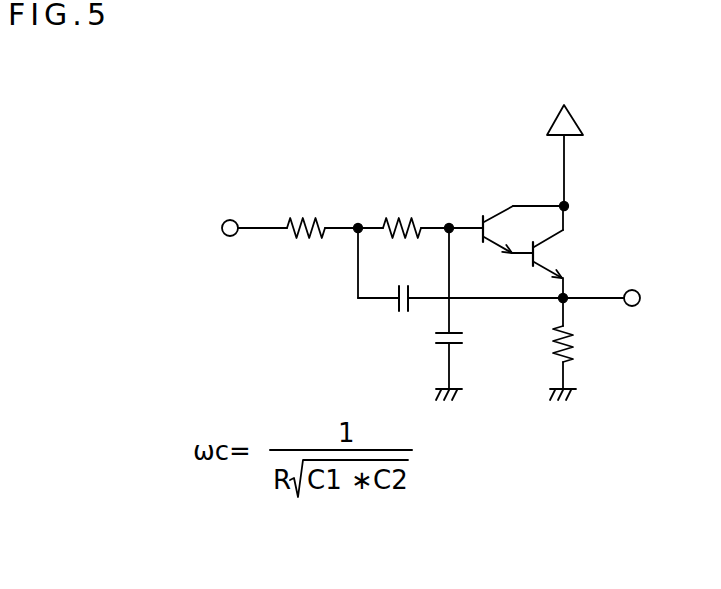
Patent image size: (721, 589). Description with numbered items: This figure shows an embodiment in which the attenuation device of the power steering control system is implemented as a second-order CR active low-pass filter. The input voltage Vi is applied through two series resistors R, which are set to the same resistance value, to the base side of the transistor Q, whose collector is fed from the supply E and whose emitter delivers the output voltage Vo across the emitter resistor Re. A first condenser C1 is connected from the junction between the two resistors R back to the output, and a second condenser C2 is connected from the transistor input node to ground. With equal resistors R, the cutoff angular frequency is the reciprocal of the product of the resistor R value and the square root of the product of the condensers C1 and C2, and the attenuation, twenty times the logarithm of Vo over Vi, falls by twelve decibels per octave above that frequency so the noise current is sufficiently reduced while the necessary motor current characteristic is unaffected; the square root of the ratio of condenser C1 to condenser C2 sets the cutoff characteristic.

The input voltage Vi is at (231, 211).
The resistor R is at (354, 212).
The condenser C1 is at (405, 283).
The condenser C2 is at (469, 340).
The Darlington transistor Q is at (540, 235).
The power supply E is at (573, 155).
The output voltage Vo is at (630, 281).
The emitter resistor Re is at (583, 344).